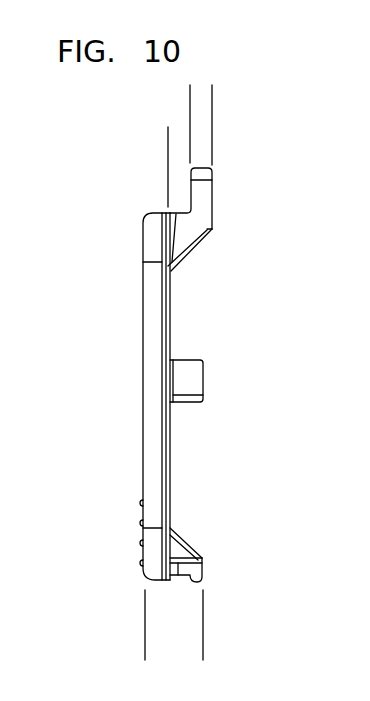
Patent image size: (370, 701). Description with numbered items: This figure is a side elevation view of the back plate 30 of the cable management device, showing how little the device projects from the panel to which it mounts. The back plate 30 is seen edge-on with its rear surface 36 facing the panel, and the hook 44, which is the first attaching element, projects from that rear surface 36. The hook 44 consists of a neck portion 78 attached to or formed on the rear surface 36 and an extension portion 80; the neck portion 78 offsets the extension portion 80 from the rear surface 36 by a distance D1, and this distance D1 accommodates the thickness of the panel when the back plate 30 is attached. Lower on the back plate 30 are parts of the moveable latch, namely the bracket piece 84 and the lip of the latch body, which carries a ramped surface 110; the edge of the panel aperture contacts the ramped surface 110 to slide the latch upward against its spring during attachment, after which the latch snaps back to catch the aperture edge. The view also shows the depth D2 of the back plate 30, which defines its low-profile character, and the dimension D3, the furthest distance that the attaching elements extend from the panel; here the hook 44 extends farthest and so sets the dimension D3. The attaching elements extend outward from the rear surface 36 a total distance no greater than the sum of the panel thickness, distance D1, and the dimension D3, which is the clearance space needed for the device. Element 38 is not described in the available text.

The back plate 30 is at (95, 189).
The contact body 38 is at (144, 410).
The rear surface 36 is at (170, 467).
The extension portion 80 is at (213, 192).
The neck portion 78 is at (190, 232).
The hook 44 is at (232, 236).
The bracket piece 84 is at (180, 543).
The ramped surface 110 is at (196, 580).
The distance D1 is at (117, 150).
The depth D2 is at (253, 633).
The dimension D3 is at (140, 112).